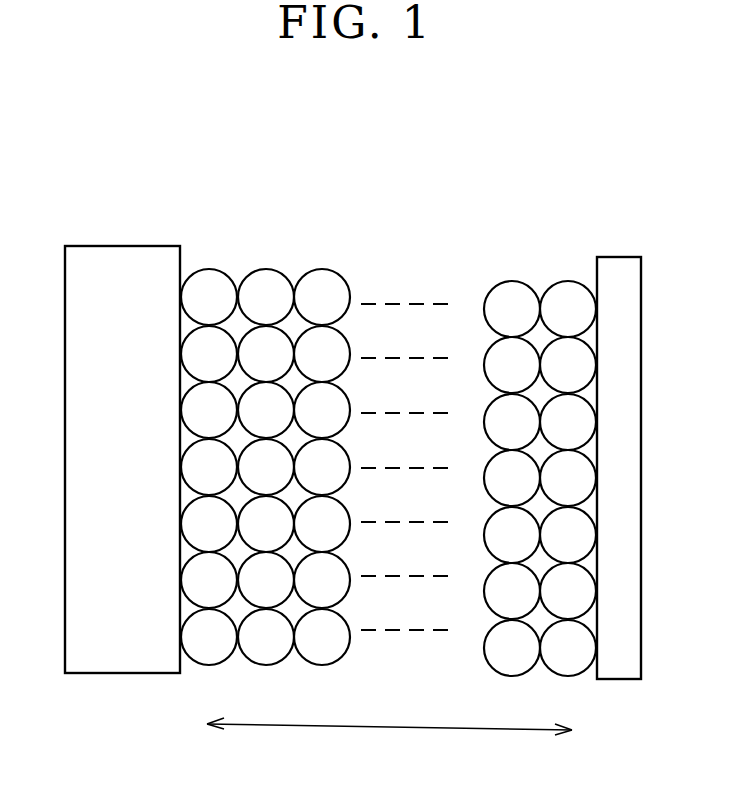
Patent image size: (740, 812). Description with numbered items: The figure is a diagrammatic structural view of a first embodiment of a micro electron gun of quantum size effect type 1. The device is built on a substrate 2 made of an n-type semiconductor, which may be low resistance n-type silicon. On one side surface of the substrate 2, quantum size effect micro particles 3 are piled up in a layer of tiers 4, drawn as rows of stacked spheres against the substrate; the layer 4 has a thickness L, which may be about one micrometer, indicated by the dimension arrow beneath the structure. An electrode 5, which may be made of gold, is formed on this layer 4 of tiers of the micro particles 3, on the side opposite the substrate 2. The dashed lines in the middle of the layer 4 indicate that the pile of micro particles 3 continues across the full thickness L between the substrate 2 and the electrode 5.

The micro electron gun of quantum size effect type 1 is at (350, 172).
The substrate 2 is at (120, 265).
The quantum size effect micro particles 3 is at (210, 290).
The layer of tiers 4 is at (408, 293).
The electrode 5 is at (616, 272).
The thickness L is at (389, 739).